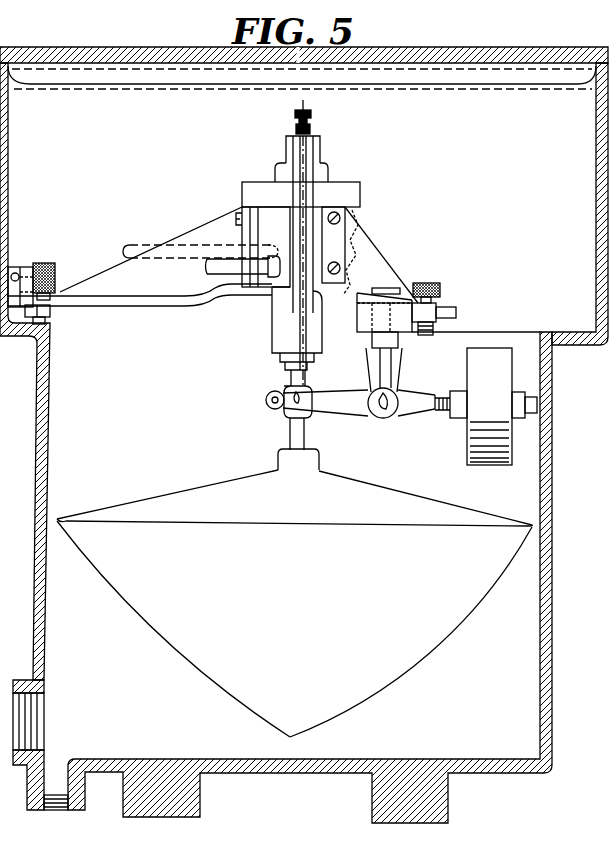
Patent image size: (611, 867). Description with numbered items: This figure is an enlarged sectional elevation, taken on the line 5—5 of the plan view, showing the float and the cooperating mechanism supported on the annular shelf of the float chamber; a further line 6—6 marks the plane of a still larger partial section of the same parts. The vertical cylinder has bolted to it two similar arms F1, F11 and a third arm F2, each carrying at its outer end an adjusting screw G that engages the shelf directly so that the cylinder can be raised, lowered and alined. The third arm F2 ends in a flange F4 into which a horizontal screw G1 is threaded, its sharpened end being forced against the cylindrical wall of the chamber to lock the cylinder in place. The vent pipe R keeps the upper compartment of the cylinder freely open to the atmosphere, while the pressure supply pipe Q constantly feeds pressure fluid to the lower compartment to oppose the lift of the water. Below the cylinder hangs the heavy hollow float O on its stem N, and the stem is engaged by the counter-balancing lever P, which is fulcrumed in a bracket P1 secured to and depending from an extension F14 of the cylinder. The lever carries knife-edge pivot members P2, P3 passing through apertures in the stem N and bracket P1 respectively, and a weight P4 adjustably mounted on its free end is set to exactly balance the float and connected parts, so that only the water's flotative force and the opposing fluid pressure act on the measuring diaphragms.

The arm F1 is at (210, 248).
The arm F11 is at (376, 257).
The third arm F2 is at (137, 309).
The flange F4 is at (15, 272).
The extension of the cylinder F14 is at (362, 308).
The adjusting screw G is at (432, 293).
The horizontal screw G1 is at (48, 263).
The vent pipe R is at (148, 248).
The pressure supply pipe Q is at (232, 287).
The counter-balancing lever P is at (365, 413).
The bracket P1 is at (402, 367).
The knife-edge pivot member P2 is at (310, 414).
The knife-edge pivot member P3 is at (394, 416).
The weight P4 is at (502, 406).
The stem N is at (288, 427).
The float O is at (294, 593).
The section line 5 is at (0, 451).
The section line 6 is at (302, 100).